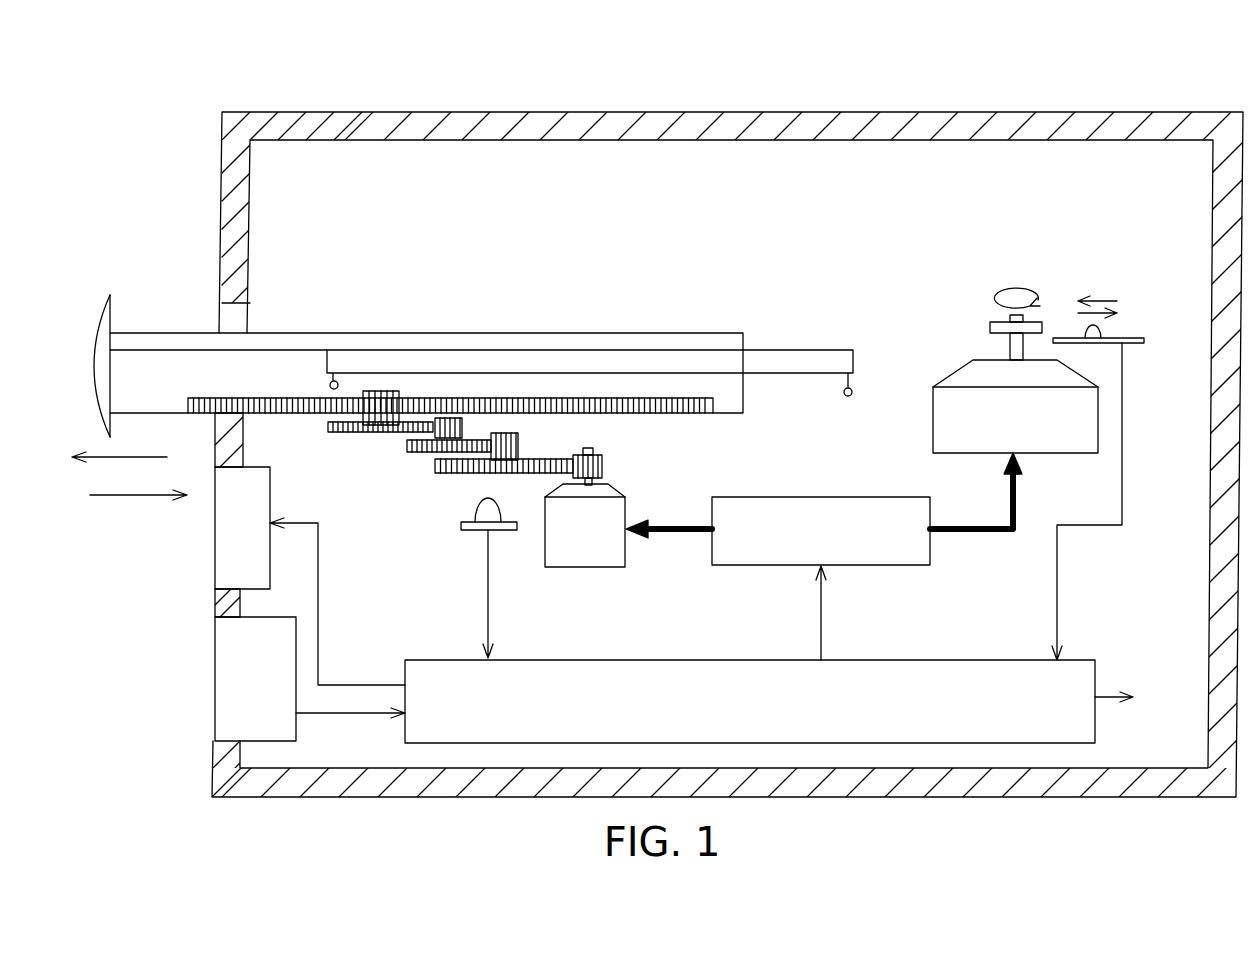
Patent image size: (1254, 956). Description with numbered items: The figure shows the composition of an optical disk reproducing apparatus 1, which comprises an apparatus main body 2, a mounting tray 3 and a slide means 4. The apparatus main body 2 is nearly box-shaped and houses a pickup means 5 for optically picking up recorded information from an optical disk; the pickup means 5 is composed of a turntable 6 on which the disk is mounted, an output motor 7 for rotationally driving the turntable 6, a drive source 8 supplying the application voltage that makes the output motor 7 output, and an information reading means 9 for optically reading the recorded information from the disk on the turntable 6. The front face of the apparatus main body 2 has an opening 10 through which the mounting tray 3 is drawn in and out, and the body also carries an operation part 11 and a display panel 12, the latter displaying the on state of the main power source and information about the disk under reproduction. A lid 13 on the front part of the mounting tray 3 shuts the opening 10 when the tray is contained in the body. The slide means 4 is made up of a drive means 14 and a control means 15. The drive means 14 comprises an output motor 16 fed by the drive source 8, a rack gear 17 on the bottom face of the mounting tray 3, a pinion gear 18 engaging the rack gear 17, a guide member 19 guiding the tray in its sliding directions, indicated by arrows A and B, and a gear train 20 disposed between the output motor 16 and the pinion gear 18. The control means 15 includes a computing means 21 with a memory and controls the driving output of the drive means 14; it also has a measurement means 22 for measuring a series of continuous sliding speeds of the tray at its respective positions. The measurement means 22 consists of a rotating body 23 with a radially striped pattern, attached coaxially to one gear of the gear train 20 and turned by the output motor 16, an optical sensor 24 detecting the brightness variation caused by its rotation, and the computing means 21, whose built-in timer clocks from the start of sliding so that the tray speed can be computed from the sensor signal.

The optical disk reproducing apparatus 1 is at (742, 106).
The apparatus main body 2 is at (222, 168).
The mounting tray 3 is at (153, 333).
The slide means 4 is at (510, 217).
The pickup means 5 is at (1152, 214).
The turntable 6 is at (1045, 327).
The output motor 7 is at (1098, 430).
The drive source 8 is at (930, 510).
The information reading means 9 is at (1130, 338).
The opening 10 is at (227, 318).
The operation part 11 is at (218, 695).
The display panel 12 is at (220, 551).
The lid 13 is at (100, 323).
The drive means 14 is at (718, 268).
The control means 15 is at (360, 517).
The output motor 16 is at (614, 487).
The rack gear 17 is at (294, 398).
The pinion gear 18 is at (383, 392).
The guide member 19 is at (702, 352).
The gear train 20 is at (502, 425).
The computing means 21 is at (455, 660).
The measurement means 22 is at (397, 520).
The rotating body 23 is at (457, 477).
The optical sensor 24 is at (486, 538).